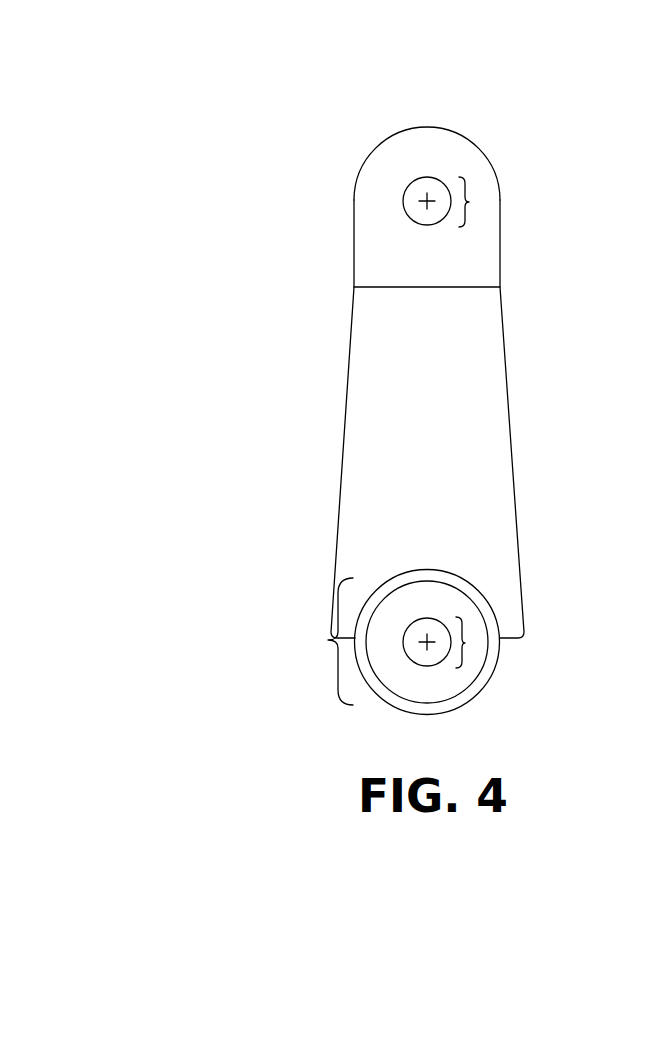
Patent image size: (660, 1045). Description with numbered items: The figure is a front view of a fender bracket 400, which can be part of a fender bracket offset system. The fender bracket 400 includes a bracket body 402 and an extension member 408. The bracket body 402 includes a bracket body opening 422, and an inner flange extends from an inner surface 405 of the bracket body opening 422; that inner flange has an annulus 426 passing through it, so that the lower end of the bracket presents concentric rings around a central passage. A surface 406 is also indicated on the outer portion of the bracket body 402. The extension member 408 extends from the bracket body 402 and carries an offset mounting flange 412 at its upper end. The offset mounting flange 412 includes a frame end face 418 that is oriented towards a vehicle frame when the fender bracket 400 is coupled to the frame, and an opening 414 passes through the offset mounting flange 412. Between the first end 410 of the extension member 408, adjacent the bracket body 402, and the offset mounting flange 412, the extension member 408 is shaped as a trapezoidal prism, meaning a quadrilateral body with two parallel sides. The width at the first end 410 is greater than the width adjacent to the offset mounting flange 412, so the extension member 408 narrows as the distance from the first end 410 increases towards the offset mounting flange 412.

The fender bracket 400 is at (193, 130).
The bracket body 402 is at (377, 578).
The inner surface 405 is at (480, 592).
The outer ring surface 406 is at (498, 648).
The extension member 408 is at (379, 411).
The first end 410 is at (443, 565).
The offset mounting flange 412 is at (378, 232).
The opening 414 is at (469, 202).
The frame end face 418 is at (483, 258).
The bracket body opening 422 is at (327, 640).
The annulus 426 is at (463, 643).